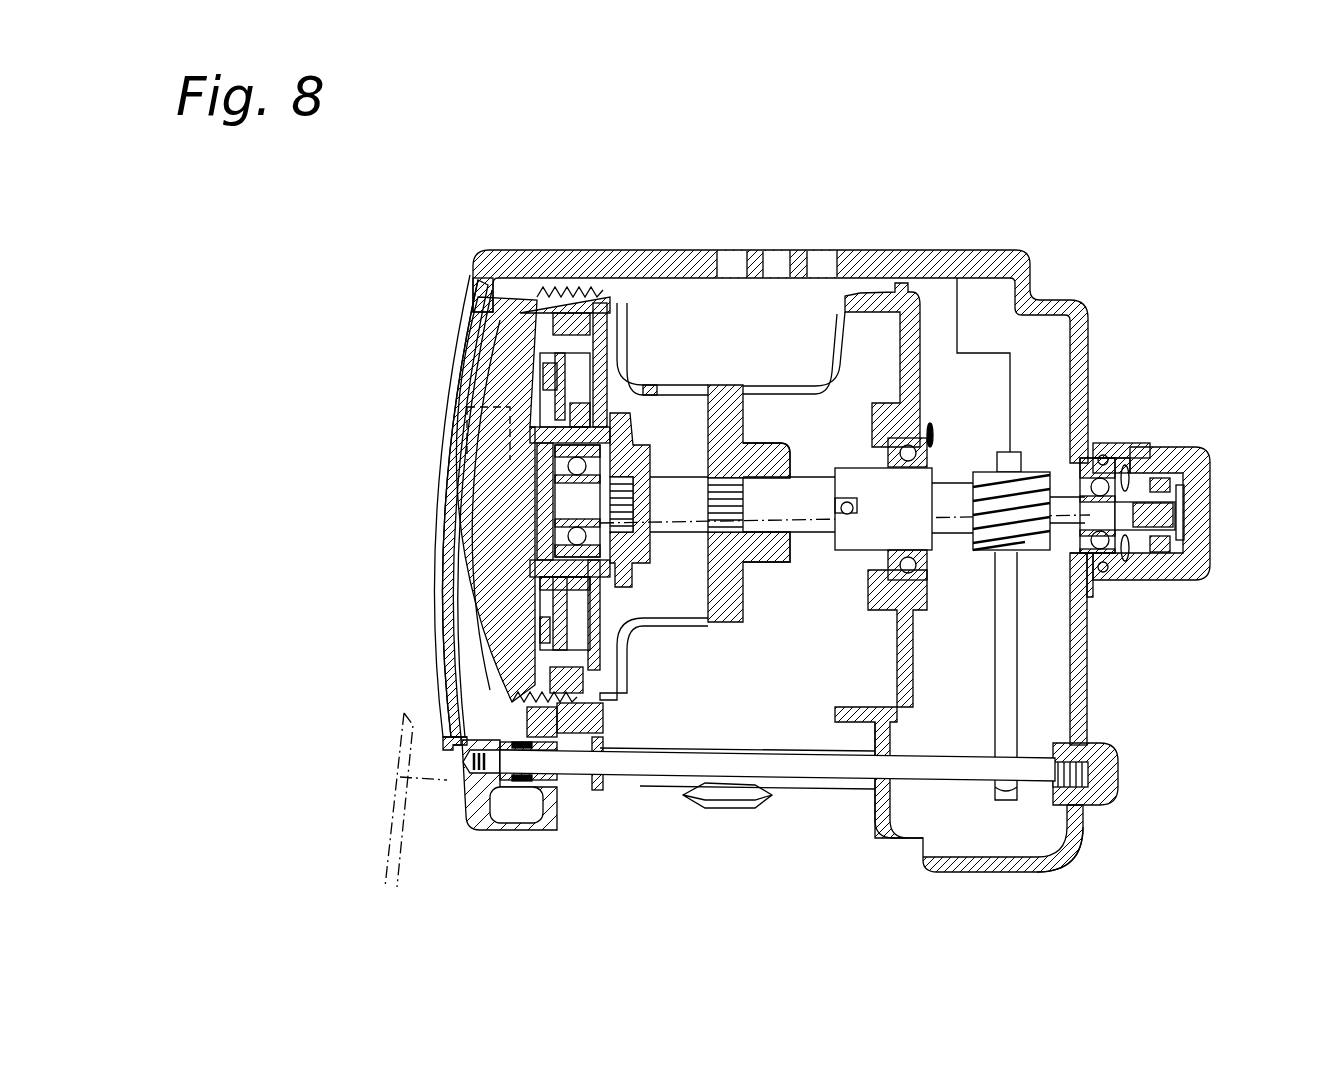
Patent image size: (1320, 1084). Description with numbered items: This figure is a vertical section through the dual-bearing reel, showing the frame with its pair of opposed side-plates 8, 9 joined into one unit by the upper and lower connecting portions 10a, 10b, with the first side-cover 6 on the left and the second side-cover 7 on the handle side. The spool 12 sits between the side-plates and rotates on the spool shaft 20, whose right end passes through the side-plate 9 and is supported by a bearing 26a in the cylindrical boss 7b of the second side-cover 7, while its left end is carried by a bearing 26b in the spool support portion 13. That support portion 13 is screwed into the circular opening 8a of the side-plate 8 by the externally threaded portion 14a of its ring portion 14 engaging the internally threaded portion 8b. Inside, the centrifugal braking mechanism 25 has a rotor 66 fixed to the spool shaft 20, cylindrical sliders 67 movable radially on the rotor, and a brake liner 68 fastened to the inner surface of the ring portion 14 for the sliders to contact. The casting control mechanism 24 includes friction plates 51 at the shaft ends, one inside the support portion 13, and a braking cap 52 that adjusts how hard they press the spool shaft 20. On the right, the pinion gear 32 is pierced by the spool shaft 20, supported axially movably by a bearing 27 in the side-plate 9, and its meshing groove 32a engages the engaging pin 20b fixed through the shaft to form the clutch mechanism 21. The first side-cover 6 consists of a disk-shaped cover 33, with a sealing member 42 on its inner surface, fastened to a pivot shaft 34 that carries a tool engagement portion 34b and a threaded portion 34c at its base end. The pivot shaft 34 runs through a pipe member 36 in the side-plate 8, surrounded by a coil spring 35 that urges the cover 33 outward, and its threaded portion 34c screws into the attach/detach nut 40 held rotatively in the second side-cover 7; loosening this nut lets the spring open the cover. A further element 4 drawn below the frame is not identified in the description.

The handle knob 4 is at (722, 802).
The first side-cover 6 is at (458, 584).
The second side-cover 7 is at (1088, 365).
The cylindrical boss 7b is at (1125, 446).
The side-plate 8 is at (553, 797).
The circular opening 8a is at (603, 680).
The internally threaded portion 8b is at (455, 740).
The side-plate 9 is at (873, 825).
The upper connecting portion 10a is at (735, 250).
The lower connecting portion 10b is at (637, 795).
The spool 12 is at (720, 387).
The spool support portion 13 is at (512, 496).
The ring portion 14 is at (470, 290).
The externally threaded portion 14a is at (523, 792).
The spool shaft 20 is at (760, 443).
The engaging pin 20b is at (847, 503).
The clutch mechanism 21 is at (847, 558).
The casting control mechanism 24 is at (1185, 444).
The centrifugal braking mechanism 25 is at (533, 621).
The bearing 26a is at (1090, 556).
The bearing 26b is at (468, 456).
The bearing 27 is at (927, 377).
The pinion gear 32 is at (955, 478).
The meshing groove 32a is at (835, 510).
The cover 33 is at (452, 522).
The pivot shaft 34 is at (808, 772).
The tool engagement portion 34b is at (455, 800).
The threaded portion 34c is at (1045, 787).
The coil spring 35 is at (475, 785).
The pipe member 36 is at (568, 790).
The attach/detach nut 40 is at (1120, 757).
The sealing member 42 is at (446, 546).
The friction plate 51 is at (1200, 512).
The braking cap 52 is at (1203, 570).
The rotor 66 is at (632, 433).
The cylindrical sliders 67 is at (553, 307).
The brake liner 68 is at (520, 690).